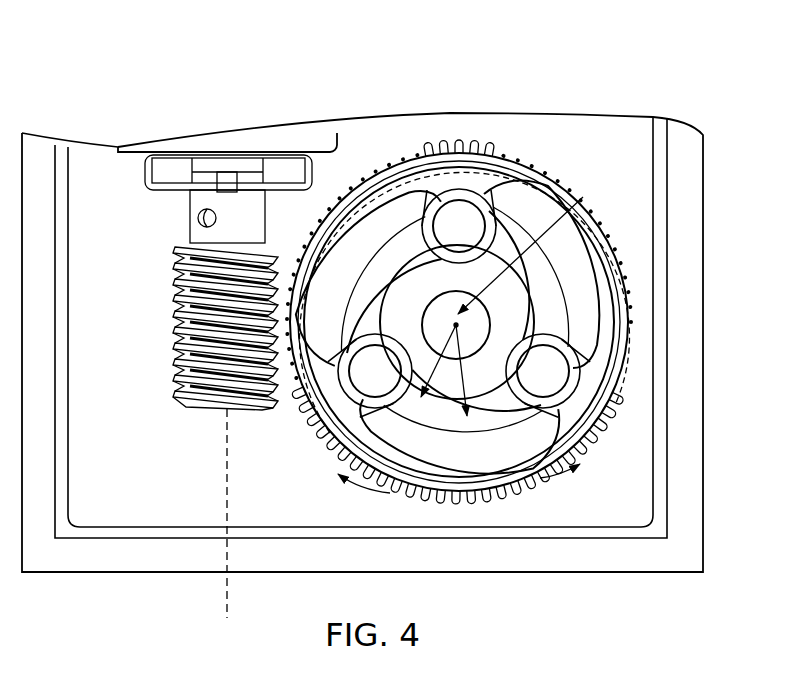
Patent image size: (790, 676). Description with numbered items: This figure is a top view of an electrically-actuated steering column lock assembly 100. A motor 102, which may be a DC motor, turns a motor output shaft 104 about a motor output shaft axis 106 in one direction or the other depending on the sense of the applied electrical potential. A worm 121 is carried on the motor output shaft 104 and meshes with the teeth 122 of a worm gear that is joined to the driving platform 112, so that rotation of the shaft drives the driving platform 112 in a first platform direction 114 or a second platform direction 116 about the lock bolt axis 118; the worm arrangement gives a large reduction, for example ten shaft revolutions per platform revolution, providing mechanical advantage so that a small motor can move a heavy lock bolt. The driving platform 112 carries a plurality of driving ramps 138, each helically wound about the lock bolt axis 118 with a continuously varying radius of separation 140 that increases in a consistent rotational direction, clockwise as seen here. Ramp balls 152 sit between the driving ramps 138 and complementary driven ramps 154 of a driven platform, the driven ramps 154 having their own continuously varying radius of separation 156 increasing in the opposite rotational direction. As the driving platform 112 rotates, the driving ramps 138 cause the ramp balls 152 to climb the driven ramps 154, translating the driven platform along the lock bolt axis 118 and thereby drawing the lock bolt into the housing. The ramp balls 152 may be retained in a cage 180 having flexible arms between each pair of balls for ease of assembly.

The electrically-actuated steering column lock assembly 100 is at (548, 72).
The motor 102 is at (321, 140).
The motor output shaft 104 is at (228, 183).
The motor output shaft axis 106 is at (222, 470).
The driving platform 112 is at (578, 410).
The first platform direction 114 is at (344, 492).
The second platform direction 116 is at (557, 487).
The lock bolt axis 118 is at (583, 197).
The worm 121 is at (175, 364).
The teeth 122 is at (482, 497).
The driving ramps 138 is at (400, 185).
The radius of separation 140 is at (548, 433).
The ramp balls 152 is at (576, 366).
The driven ramps 154 is at (313, 320).
The radius of separation 156 is at (378, 350).
The cage 180 is at (575, 383).